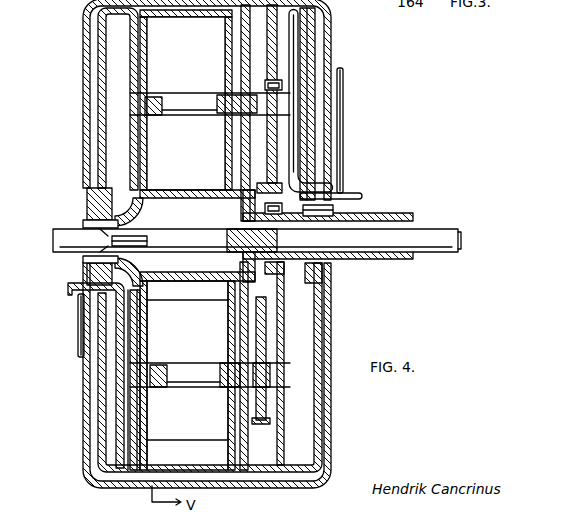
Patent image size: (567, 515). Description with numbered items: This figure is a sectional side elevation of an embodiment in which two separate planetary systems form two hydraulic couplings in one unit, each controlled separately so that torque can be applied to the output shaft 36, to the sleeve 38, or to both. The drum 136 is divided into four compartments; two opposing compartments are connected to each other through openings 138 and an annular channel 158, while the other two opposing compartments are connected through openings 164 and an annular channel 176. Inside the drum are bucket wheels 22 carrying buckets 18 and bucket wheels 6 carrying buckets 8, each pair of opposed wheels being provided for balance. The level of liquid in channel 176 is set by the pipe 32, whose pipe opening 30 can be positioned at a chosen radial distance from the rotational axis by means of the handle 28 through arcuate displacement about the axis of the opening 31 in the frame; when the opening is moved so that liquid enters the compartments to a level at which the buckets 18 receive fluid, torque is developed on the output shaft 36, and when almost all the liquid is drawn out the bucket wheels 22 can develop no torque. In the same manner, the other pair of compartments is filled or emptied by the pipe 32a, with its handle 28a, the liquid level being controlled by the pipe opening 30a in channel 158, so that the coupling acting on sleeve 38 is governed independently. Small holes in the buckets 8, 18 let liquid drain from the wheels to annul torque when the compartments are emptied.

The pipe opening 30 is at (312, 5).
The pipe opening 30a is at (97, 482).
The annular channel 158 is at (118, 30).
The bucket wheel 22 is at (150, 152).
The bucket 18 is at (186, 181).
The sleeve 38 is at (337, 217).
The openings 164 is at (282, 34).
The pipe 32 is at (293, 76).
The handle 28 is at (341, 112).
The opening 31 is at (322, 190).
The output shaft 36 is at (443, 232).
The pipe 32a is at (120, 330).
The handle 28a is at (80, 345).
The drum 136 is at (105, 445).
The openings 138 is at (118, 411).
The bucket wheel 6 is at (157, 403).
The bucket 8 is at (194, 455).
The annular channel 176 is at (304, 458).